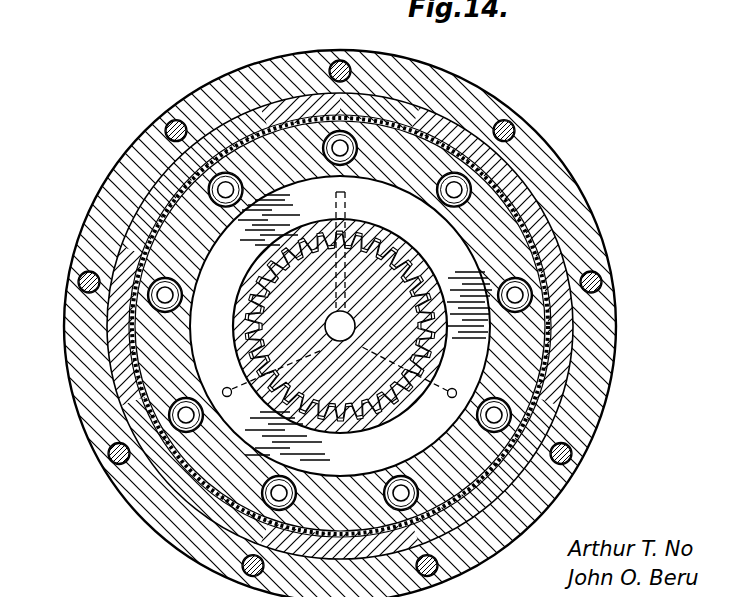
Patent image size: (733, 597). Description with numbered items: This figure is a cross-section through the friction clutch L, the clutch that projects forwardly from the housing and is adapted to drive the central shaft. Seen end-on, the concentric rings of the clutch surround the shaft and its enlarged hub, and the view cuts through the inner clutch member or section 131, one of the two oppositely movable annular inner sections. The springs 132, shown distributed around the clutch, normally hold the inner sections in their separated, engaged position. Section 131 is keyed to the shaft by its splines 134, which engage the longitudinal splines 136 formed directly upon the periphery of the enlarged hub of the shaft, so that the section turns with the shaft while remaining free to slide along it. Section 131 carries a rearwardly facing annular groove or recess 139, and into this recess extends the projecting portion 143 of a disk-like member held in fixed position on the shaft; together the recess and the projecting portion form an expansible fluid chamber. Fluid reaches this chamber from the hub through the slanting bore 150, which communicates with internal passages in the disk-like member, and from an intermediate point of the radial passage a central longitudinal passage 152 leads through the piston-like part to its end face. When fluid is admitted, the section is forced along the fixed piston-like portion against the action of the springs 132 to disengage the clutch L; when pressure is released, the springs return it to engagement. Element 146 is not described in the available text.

The friction clutch L is at (513, 110).
The inner clutch member or section 131 is at (483, 207).
The springs 132 is at (521, 292).
The splines 134 is at (390, 250).
The longitudinal splines 136 is at (385, 262).
The annular groove or recess 139 is at (489, 343).
The projecting portion 143 is at (470, 377).
The shaft bore 146 is at (326, 327).
The slanting bore 150 is at (383, 210).
The central longitudinal passage 152 is at (337, 195).